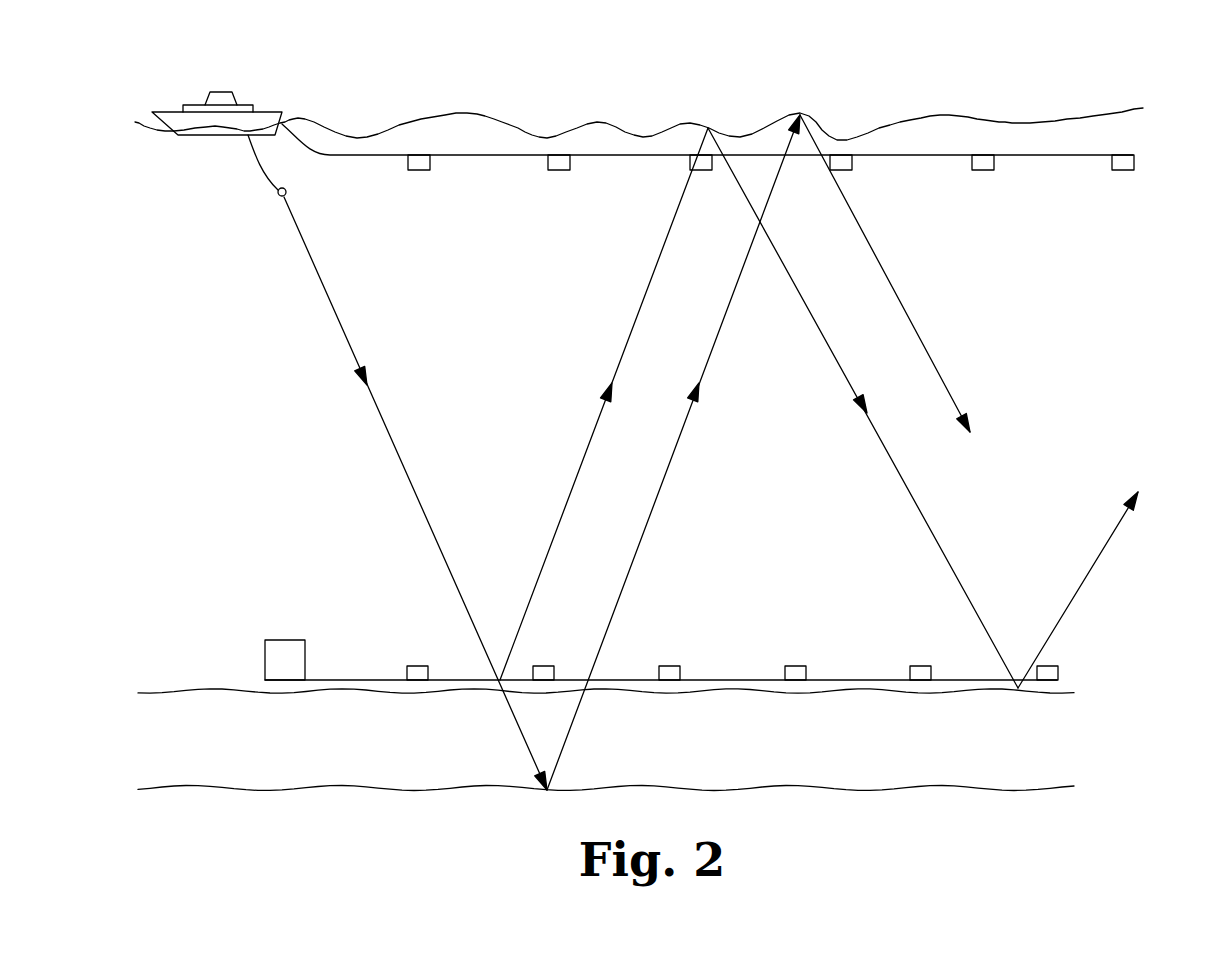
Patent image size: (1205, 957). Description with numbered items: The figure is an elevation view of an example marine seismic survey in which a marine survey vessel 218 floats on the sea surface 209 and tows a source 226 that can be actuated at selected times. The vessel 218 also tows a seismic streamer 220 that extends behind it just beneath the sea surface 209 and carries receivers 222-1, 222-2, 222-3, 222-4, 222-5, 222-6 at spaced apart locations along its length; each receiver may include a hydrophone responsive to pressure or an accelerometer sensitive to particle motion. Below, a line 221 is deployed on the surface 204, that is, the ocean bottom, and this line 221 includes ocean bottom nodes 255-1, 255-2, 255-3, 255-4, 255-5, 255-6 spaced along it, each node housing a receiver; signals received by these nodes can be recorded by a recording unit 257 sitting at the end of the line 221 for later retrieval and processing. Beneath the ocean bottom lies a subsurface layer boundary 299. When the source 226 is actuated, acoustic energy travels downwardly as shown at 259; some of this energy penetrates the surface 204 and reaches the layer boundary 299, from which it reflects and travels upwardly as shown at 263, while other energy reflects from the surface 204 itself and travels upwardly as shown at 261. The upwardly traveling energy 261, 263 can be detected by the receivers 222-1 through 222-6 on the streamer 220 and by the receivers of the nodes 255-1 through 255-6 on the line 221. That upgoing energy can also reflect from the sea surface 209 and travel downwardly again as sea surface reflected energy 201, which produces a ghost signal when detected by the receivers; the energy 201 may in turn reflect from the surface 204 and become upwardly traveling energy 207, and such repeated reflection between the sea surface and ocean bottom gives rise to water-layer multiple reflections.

The marine survey vessel 218 is at (165, 112).
The sea surface 209 is at (378, 134).
The seismic streamer 220 is at (350, 157).
The source 226 is at (278, 192).
The receiver 222-1 is at (419, 170).
The receiver 222-2 is at (561, 170).
The receiver 222-3 is at (701, 170).
The receiver 222-4 is at (840, 170).
The receiver 222-5 is at (986, 170).
The receiver 222-6 is at (1124, 170).
The downwardly traveling energy 259 is at (379, 420).
The upwardly traveling energy 261 is at (630, 331).
The upwardly traveling energy 263 is at (668, 478).
The sea surface reflected energy 201 is at (841, 384).
The upwardly traveling energy 207 is at (1088, 581).
The surface 204 is at (183, 690).
The subsurface layer boundary 299 is at (183, 788).
The line 221 is at (341, 680).
The recording unit 257 is at (285, 640).
The ocean bottom node 255-1 is at (417, 666).
The ocean bottom node 255-2 is at (544, 666).
The ocean bottom node 255-3 is at (670, 666).
The ocean bottom node 255-4 is at (796, 666).
The ocean bottom node 255-5 is at (920, 666).
The ocean bottom node 255-6 is at (1052, 666).